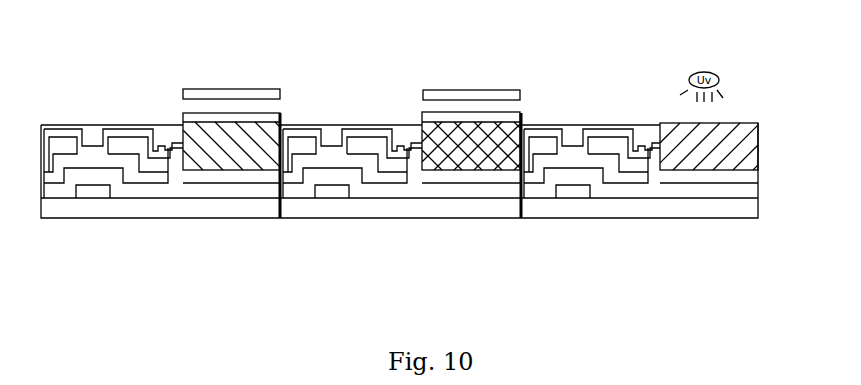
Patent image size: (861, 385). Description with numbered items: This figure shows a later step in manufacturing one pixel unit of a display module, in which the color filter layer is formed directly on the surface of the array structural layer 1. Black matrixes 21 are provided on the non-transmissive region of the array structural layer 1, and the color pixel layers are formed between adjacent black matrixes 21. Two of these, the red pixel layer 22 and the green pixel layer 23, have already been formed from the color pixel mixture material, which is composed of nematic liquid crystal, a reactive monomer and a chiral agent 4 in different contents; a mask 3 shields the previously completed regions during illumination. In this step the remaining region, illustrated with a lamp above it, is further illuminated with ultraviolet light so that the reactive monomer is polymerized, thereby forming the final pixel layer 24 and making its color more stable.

The array structural layer 1 is at (358, 220).
The black matrix 21 is at (163, 133).
The red pixel layer 22 is at (271, 127).
The green pixel layer 23 is at (516, 131).
The blue pixel layer 24 is at (751, 125).
The mask 3 is at (231, 93).
The chiral agent 4 is at (427, 118).